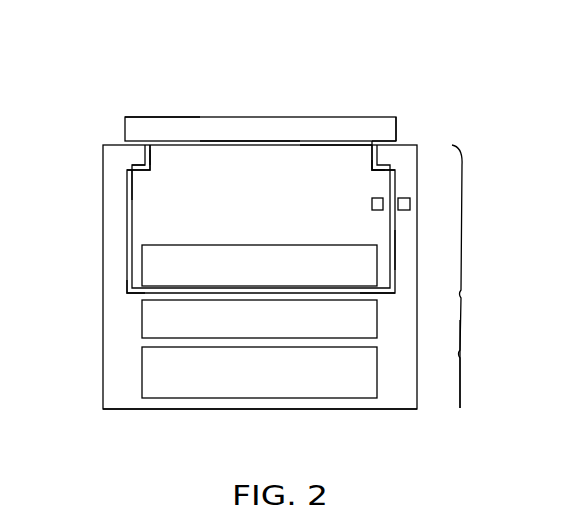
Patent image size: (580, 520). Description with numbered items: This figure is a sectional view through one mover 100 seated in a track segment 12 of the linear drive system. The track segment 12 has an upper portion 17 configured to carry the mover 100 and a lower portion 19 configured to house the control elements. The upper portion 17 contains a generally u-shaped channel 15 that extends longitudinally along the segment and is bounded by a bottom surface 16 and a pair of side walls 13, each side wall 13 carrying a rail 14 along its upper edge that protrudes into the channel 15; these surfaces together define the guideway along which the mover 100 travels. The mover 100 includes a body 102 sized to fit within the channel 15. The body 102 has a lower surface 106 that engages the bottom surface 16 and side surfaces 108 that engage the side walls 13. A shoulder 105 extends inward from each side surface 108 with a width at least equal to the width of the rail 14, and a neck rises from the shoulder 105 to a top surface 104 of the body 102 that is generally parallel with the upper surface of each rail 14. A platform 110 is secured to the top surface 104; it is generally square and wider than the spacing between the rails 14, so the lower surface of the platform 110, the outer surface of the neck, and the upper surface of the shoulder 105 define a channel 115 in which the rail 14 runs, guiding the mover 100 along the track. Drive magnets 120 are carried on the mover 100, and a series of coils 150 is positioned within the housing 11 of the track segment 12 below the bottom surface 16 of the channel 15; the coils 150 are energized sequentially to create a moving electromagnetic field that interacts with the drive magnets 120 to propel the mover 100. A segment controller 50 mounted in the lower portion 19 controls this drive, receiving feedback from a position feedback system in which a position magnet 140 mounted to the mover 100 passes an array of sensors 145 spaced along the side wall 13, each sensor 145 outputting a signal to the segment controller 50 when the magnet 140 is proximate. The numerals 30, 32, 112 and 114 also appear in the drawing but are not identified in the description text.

The housing 11 is at (120, 380).
The track segment 12 is at (100, 313).
The side wall 13 is at (125, 222).
The rail 14 is at (133, 158).
The channel 15 is at (132, 175).
The bottom surface 16 is at (135, 299).
The upper portion 17 is at (465, 218).
The lower portion 19 is at (458, 355).
The cavity 30 is at (140, 174).
The step surface 32 is at (157, 160).
The segment controller 50 is at (277, 385).
The mover 100 is at (158, 116).
The body 102 is at (250, 155).
The top surface 104 is at (337, 146).
The shoulder 105 is at (370, 170).
The lower surface 106 is at (383, 293).
The side surface 108 is at (393, 252).
The platform 110 is at (373, 143).
The lid 112 is at (203, 117).
The lid end portion 114 is at (380, 135).
The channel 115 is at (372, 140).
The drive magnet 120 is at (208, 263).
The position magnet 140 is at (381, 197).
The sensor 145 is at (403, 197).
The coil 150 is at (284, 333).